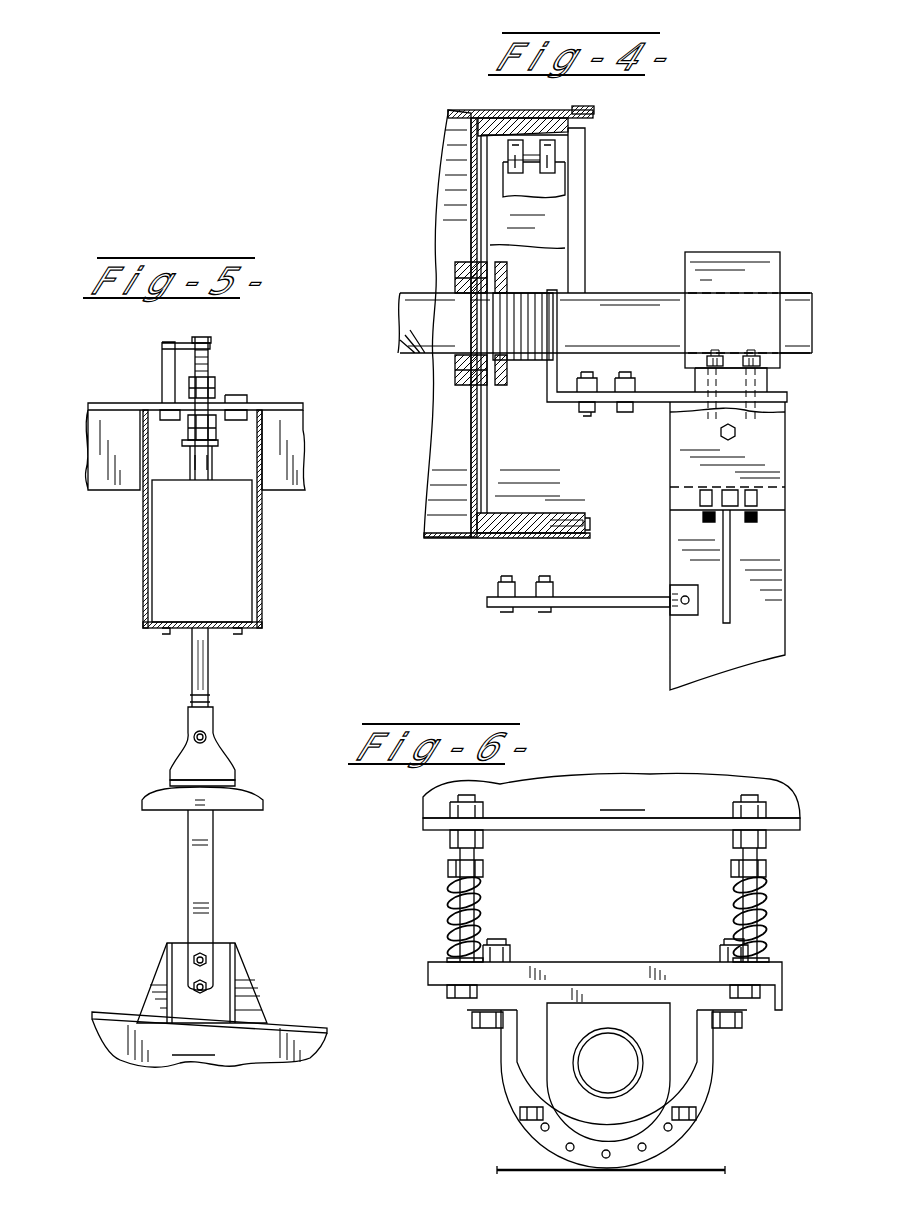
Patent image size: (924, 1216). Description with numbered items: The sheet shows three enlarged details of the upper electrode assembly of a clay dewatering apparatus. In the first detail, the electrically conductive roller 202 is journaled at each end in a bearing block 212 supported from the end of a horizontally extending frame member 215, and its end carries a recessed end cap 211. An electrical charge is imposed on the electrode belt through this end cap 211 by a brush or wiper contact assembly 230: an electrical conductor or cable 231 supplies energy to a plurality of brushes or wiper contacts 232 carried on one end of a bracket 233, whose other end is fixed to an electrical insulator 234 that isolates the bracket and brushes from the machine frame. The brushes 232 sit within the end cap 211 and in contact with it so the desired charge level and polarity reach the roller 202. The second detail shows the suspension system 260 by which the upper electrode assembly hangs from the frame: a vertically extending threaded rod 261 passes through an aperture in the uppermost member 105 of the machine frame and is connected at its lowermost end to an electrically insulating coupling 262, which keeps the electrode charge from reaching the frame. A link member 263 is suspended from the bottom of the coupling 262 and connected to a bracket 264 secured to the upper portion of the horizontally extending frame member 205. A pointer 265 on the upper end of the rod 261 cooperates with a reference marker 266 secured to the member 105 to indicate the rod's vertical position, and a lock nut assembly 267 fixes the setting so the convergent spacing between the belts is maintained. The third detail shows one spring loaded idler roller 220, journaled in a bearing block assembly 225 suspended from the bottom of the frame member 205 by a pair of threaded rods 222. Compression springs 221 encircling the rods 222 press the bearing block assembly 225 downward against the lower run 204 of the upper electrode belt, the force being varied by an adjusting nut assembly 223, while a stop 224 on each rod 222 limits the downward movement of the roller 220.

In FIG. 5, the uppermost member 105 is at (296, 405).
In FIG. 4, the roller 202 is at (450, 206).
In FIG. 6, the lower run 204 is at (697, 1168).
In FIG. 5, the horizontally extending frame member 205 is at (209, 1039).
In FIG. 6, the horizontally extending frame member 205 is at (611, 801).
In FIG. 4, the recessed end cap 211 is at (520, 525).
In FIG. 4, the bearing block 212 is at (780, 262).
In FIG. 4, the horizontally extending frame member 215 is at (790, 542).
In FIG. 6, the spring loaded idler roller 220 is at (499, 1081).
In FIG. 6, the compression spring 221 is at (483, 916).
In FIG. 6, the threaded rod 222 is at (480, 852).
In FIG. 6, the adjusting nut assembly 223 is at (446, 880).
In FIG. 6, the stop 224 is at (450, 995).
In FIG. 6, the bearing block assembly 225 is at (690, 1060).
In FIG. 4, the brush or wiper contact assembly 230 is at (570, 160).
In FIG. 4, the electrical conductor or cable 231 is at (557, 188).
In FIG. 4, the brushes or wiper contacts 232 is at (580, 127).
In FIG. 4, the bracket 233 is at (555, 250).
In FIG. 4, the electrical insulator 234 is at (522, 362).
In FIG. 5, the suspension system 260 is at (188, 692).
In FIG. 5, the threaded rod 261 is at (210, 668).
In FIG. 5, the electrically insulating coupling 262 is at (215, 757).
In FIG. 5, the link member 263 is at (205, 870).
In FIG. 5, the bracket 264 is at (225, 985).
In FIG. 5, the pointer 265 is at (182, 344).
In FIG. 5, the reference marker 266 is at (166, 378).
In FIG. 5, the lock nut assembly 267 is at (222, 388).